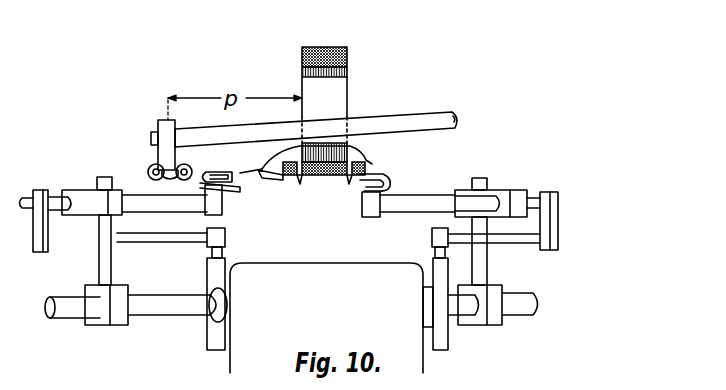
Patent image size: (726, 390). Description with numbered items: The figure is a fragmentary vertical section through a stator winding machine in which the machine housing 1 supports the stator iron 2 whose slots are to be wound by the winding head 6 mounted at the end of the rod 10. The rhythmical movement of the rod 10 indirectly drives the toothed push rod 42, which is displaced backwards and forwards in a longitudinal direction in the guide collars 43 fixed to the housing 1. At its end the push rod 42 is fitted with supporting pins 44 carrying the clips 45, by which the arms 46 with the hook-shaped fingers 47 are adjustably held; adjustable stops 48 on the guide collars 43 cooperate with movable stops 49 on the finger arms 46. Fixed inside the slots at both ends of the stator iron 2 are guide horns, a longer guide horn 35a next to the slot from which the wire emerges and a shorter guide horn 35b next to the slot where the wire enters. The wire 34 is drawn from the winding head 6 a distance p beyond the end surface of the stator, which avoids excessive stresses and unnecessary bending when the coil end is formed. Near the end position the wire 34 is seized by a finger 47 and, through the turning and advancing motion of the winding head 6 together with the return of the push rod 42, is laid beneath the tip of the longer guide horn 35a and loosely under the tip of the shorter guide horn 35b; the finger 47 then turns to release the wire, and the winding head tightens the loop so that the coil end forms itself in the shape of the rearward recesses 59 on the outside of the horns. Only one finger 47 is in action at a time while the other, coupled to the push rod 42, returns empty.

The machine housing 1 is at (331, 318).
The stator iron 2 is at (345, 47).
The winding head 6 is at (165, 142).
The rod 10 is at (436, 118).
The wire 34 is at (246, 177).
The longer guide horn 35a is at (273, 179).
The shorter guide horn 35b is at (370, 163).
The push rod 42 is at (514, 312).
The guide collars 43 is at (212, 321).
The supporting pins 44 is at (482, 270).
The clips 45 is at (505, 192).
The arms 46 is at (417, 203).
The hook-shaped fingers 47 is at (237, 167).
The adjustable stops 48 is at (512, 239).
The movable stops 49 is at (556, 203).
The rearward recesses 59 is at (300, 184).